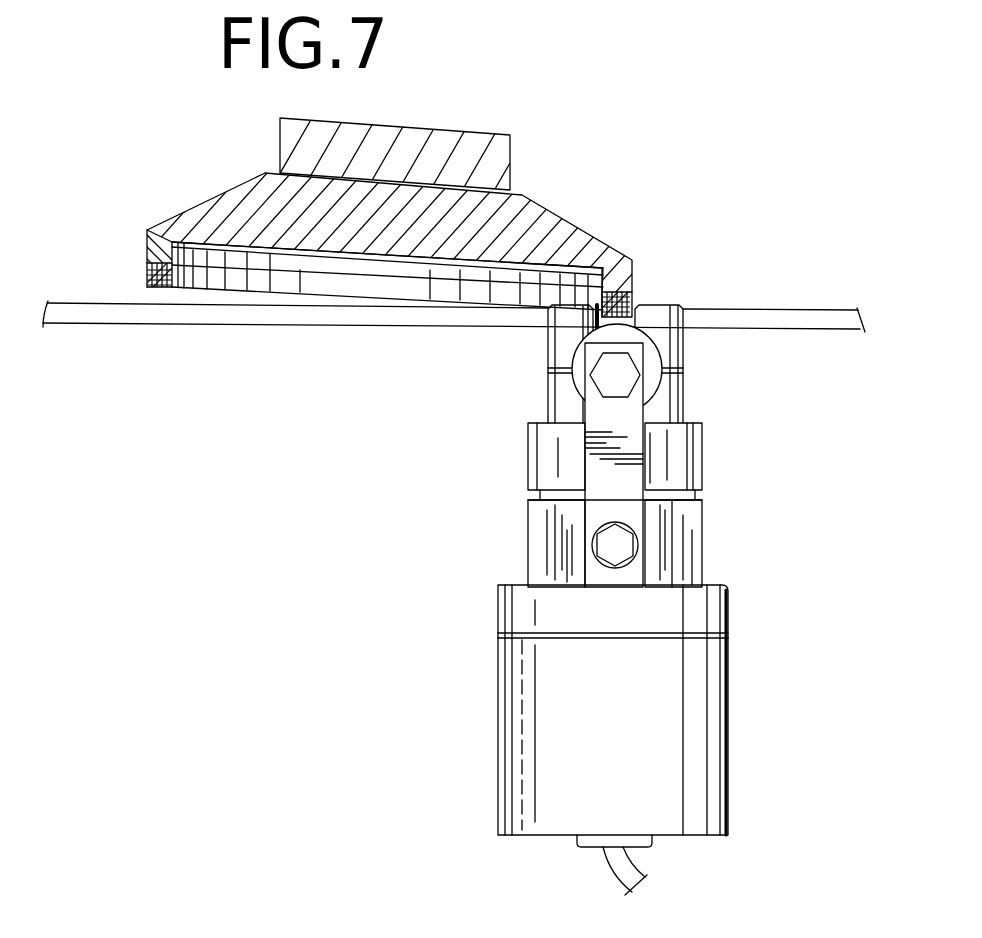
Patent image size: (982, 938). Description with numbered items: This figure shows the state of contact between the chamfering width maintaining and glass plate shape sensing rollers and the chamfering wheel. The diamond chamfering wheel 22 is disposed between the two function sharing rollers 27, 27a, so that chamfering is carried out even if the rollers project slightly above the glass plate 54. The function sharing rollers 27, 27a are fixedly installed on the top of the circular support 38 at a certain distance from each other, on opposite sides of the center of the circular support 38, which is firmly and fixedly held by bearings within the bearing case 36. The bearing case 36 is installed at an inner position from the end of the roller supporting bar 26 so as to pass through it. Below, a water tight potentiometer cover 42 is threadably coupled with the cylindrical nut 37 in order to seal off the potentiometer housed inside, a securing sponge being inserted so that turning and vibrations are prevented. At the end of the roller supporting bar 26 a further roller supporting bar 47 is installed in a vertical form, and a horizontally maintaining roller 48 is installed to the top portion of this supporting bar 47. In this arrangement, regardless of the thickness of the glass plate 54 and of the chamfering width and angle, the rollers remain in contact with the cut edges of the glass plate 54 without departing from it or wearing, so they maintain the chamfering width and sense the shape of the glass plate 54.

The diamond chamfering wheel 22 is at (498, 168).
The roller supporting bar 26 is at (687, 548).
The function sharing roller 27 is at (683, 347).
The function sharing roller 27a is at (547, 345).
The bearing case 36 is at (680, 495).
The cylindrical nut 37 is at (508, 610).
The circular support 38 is at (690, 453).
The water tight potentiometer cover 42 is at (512, 752).
The roller supporting bar 47 is at (580, 453).
The horizontally maintaining roller 48 is at (652, 393).
The glass plate 54 is at (147, 315).